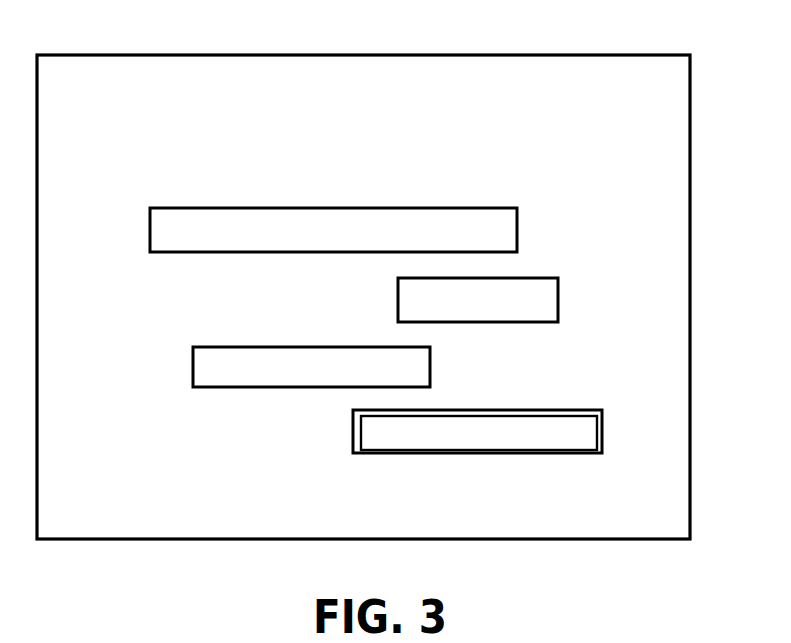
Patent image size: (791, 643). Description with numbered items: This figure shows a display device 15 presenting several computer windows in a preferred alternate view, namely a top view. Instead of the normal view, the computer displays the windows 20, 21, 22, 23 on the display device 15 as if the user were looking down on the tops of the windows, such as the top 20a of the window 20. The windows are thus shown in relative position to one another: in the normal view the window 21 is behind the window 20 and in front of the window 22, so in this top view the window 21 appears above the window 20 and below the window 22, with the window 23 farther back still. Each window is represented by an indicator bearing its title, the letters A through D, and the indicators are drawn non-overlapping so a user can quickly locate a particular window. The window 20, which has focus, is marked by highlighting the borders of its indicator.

The display device 15 is at (594, 55).
The window 20 is at (477, 455).
The top 20a is at (390, 438).
The window 21 is at (430, 361).
The window 22 is at (558, 303).
The window 23 is at (517, 228).